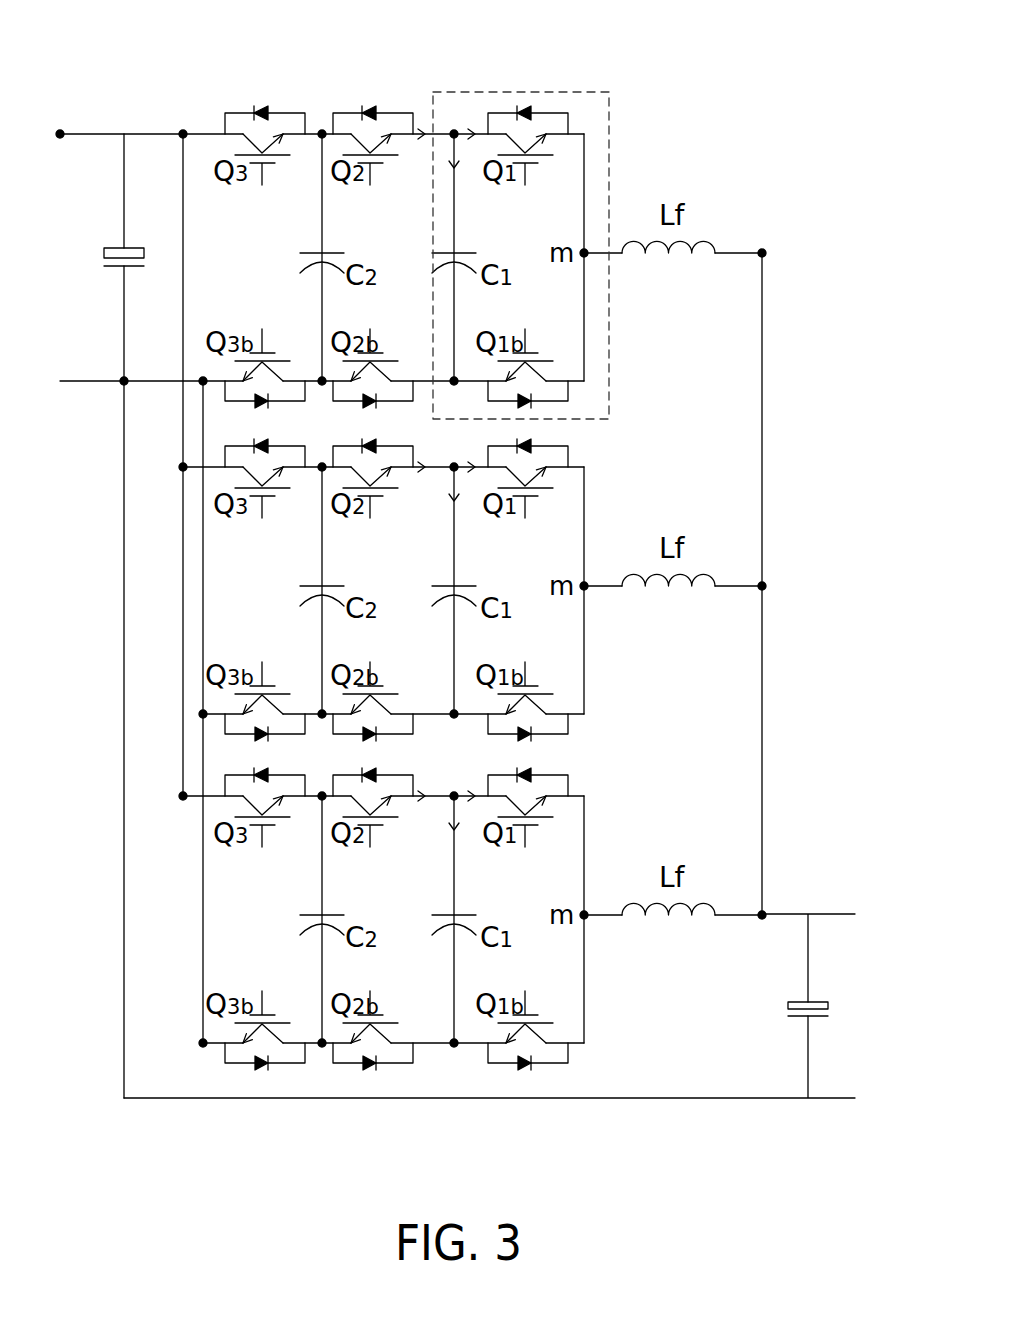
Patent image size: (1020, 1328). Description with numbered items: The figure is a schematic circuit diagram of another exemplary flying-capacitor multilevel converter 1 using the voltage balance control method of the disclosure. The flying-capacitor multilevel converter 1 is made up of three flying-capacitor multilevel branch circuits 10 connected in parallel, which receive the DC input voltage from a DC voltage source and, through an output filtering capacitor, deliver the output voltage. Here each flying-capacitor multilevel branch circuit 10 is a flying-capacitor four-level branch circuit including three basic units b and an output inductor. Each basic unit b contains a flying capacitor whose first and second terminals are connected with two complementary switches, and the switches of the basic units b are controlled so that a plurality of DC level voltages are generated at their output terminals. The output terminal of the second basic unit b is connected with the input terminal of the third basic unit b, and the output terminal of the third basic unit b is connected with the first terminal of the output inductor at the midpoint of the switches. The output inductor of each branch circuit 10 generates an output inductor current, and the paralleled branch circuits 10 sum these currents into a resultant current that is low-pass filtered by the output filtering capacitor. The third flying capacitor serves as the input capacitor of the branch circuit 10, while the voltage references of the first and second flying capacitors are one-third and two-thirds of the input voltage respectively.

The flying-capacitor multilevel converter 1 is at (464, 549).
The flying-capacitor multilevel branch circuit 10 is at (474, 555).
The basic unit b is at (560, 90).